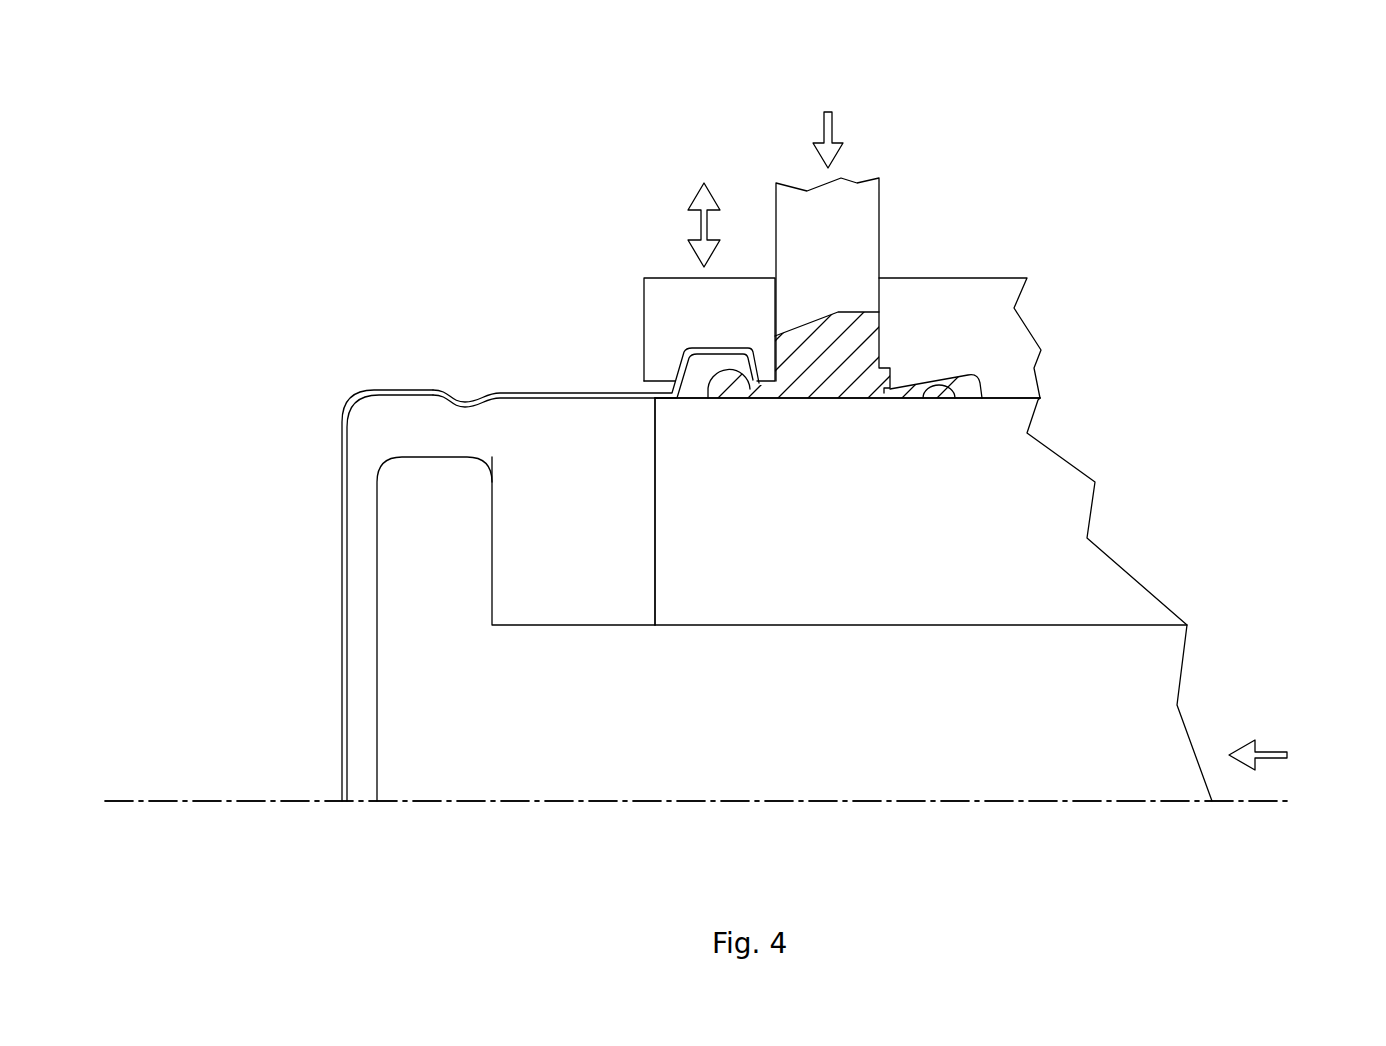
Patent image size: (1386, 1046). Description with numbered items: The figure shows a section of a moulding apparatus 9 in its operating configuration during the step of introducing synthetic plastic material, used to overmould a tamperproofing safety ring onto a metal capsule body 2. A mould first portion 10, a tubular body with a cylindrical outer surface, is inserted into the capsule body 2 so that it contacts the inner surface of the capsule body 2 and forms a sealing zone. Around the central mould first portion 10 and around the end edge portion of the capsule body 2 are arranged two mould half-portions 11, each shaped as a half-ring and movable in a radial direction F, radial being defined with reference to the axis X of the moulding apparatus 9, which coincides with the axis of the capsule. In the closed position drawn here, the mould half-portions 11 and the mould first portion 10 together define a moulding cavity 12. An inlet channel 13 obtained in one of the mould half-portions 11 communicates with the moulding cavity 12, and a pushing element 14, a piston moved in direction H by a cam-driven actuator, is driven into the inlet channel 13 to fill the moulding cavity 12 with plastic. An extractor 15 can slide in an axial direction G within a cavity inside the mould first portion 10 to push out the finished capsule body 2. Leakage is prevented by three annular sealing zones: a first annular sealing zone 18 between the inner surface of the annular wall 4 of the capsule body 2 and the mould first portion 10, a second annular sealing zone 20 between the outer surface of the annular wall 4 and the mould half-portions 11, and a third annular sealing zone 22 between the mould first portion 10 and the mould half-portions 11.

The capsule body 2 is at (347, 584).
The annular wall 4 is at (527, 395).
The moulding apparatus 9 is at (410, 110).
The mould first portion 10 is at (1065, 508).
The mould half-portions 11 is at (980, 292).
The moulding cavity 12 is at (695, 375).
The inlet channel 13 is at (865, 340).
The pushing element 14 is at (788, 215).
The extractor 15 is at (528, 773).
The first annular sealing zone 18 is at (656, 399).
The second annular sealing zone 20 is at (757, 381).
The third annular sealing zone 22 is at (998, 397).
The radial direction F is at (703, 225).
The direction of pushing element H is at (830, 130).
The axial direction G is at (1267, 753).
The axis X is at (1046, 801).